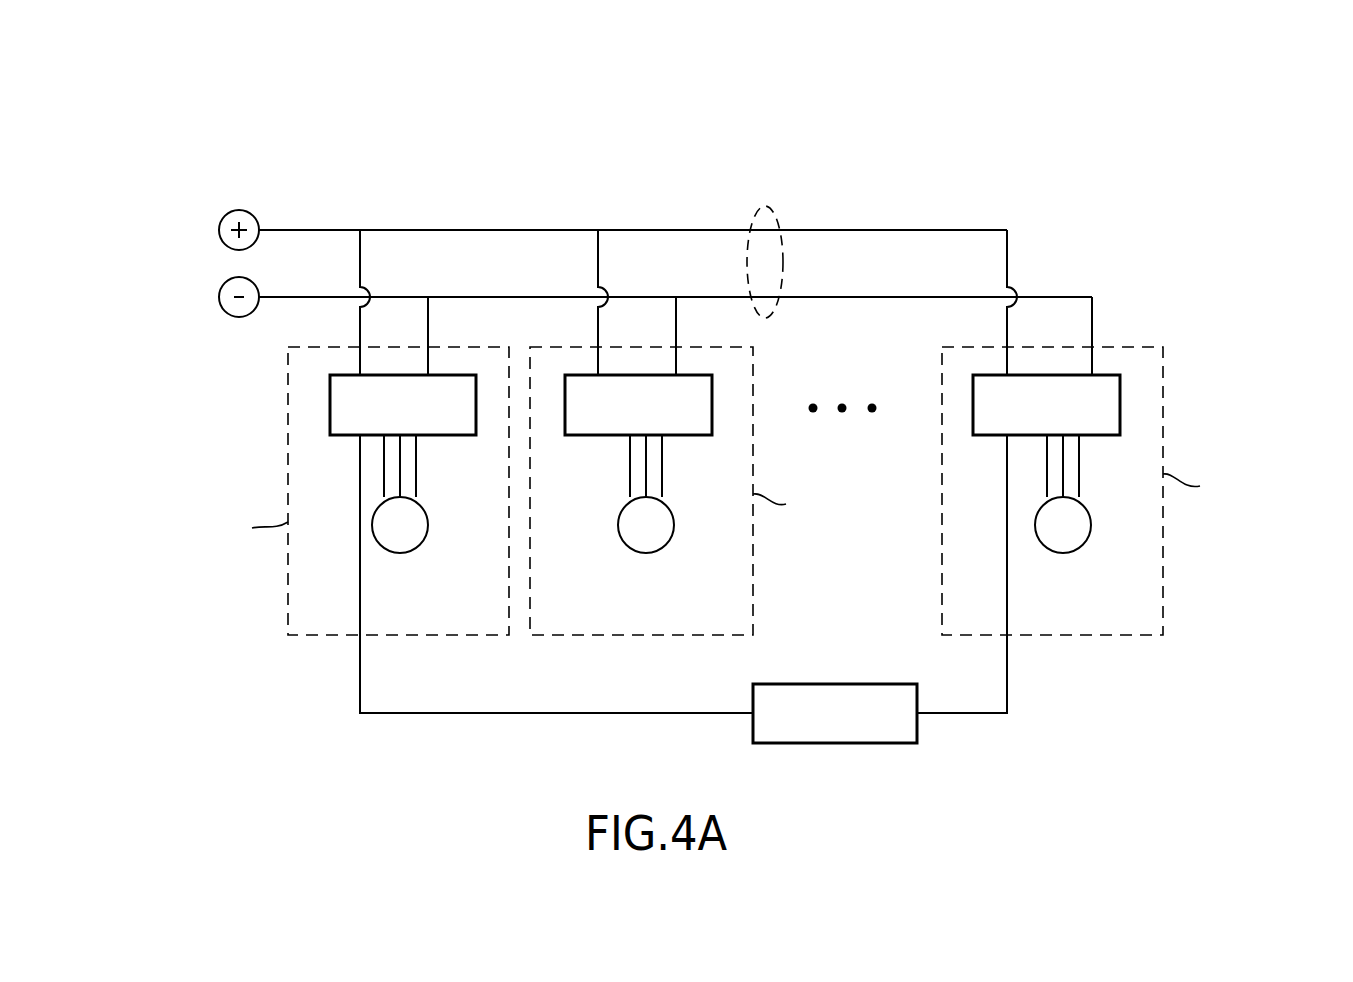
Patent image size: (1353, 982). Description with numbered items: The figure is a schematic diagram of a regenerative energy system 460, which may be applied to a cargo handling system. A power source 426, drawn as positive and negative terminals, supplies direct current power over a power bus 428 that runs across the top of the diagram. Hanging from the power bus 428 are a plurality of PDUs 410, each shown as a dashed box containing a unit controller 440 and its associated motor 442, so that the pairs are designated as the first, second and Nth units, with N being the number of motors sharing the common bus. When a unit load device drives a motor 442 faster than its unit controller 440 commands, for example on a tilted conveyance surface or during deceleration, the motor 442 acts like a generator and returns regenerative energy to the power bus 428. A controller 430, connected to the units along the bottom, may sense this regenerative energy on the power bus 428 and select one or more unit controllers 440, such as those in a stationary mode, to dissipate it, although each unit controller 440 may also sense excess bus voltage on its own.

The regenerative energy system 460 is at (337, 116).
The power source 426 is at (211, 257).
The power bus 428 is at (776, 222).
The PDUs 410 is at (426, 638).
The unit controllers 440 is at (460, 438).
The motors 442 is at (414, 549).
The controller 430 is at (917, 730).